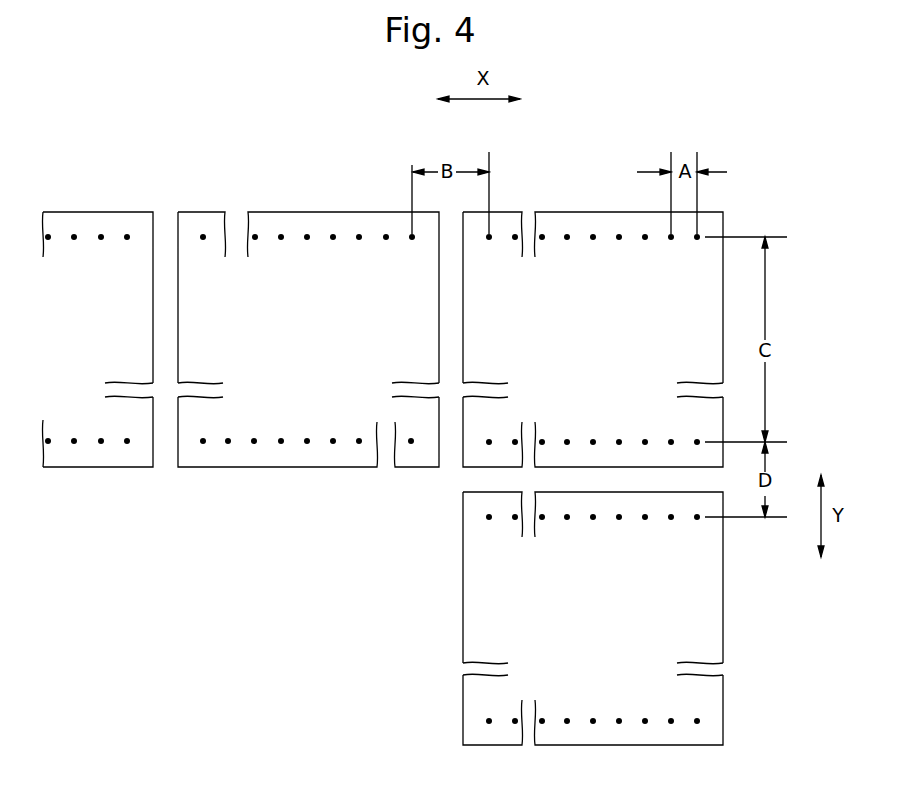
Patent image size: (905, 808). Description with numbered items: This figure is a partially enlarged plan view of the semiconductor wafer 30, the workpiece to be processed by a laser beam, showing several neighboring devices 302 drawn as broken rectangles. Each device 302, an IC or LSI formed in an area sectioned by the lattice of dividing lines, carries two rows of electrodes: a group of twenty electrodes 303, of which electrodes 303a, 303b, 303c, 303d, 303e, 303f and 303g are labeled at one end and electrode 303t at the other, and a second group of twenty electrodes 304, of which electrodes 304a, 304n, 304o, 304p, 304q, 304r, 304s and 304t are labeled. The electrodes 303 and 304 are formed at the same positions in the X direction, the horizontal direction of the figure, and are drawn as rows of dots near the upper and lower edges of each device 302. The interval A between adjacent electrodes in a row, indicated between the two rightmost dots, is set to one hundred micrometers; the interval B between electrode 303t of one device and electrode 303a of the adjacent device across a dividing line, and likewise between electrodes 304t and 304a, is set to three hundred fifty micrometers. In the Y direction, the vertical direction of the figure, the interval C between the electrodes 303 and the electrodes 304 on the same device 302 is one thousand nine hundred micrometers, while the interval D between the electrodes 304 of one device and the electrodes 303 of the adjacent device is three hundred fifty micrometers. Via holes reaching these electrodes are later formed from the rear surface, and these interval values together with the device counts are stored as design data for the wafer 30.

The semiconductor wafer 30 is at (757, 188).
The device 302 is at (67, 345).
The electrodes 303 is at (173, 125).
The electrode 303a is at (411, 235).
The electrode 303b is at (385, 235).
The electrode 303c is at (358, 235).
The electrode 303d is at (332, 235).
The electrode 303e is at (284, 189).
The electrode 303f is at (280, 235).
The electrode 303g is at (253, 235).
The electrode 303t is at (203, 234).
The electrodes 304 is at (418, 543).
The electrode 304a is at (411, 444).
The electrode 304n is at (359, 444).
The electrode 304o is at (333, 444).
The electrode 304p is at (307, 444).
The electrode 304q is at (281, 444).
The electrode 304r is at (254, 444).
The electrode 304s is at (228, 444).
The electrode 304t is at (203, 444).